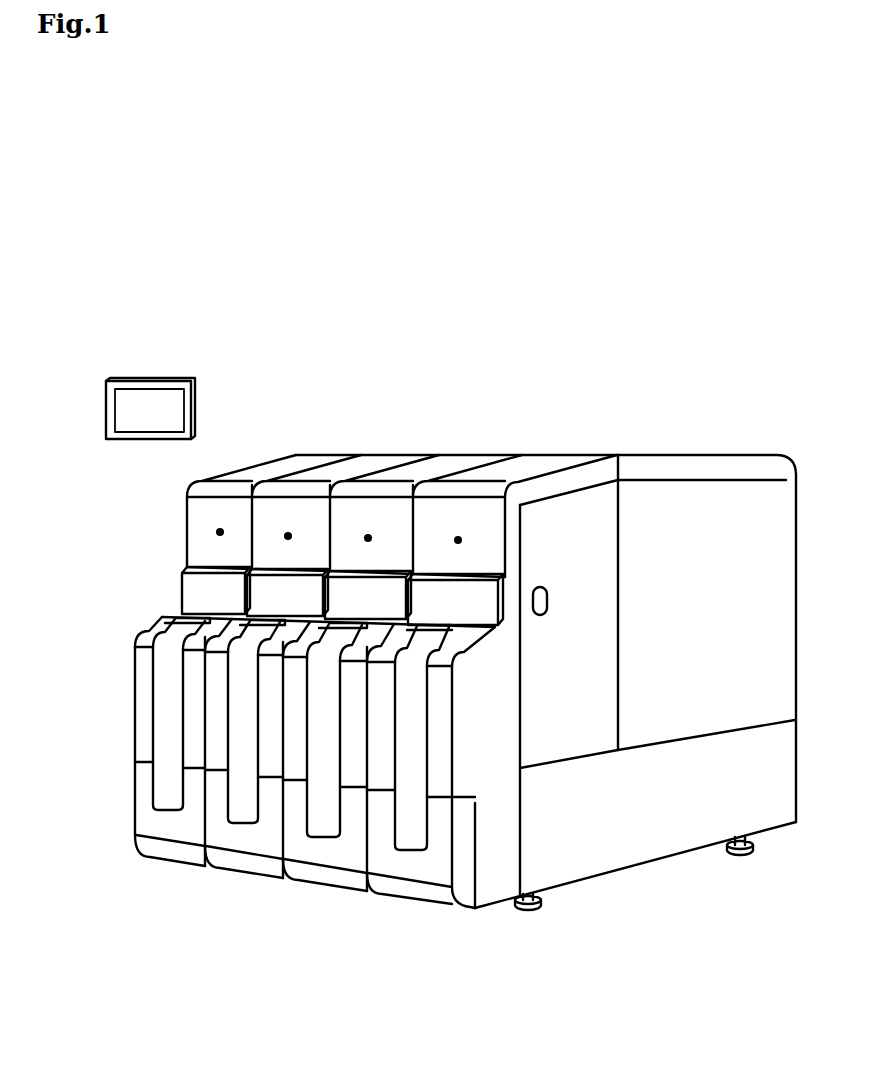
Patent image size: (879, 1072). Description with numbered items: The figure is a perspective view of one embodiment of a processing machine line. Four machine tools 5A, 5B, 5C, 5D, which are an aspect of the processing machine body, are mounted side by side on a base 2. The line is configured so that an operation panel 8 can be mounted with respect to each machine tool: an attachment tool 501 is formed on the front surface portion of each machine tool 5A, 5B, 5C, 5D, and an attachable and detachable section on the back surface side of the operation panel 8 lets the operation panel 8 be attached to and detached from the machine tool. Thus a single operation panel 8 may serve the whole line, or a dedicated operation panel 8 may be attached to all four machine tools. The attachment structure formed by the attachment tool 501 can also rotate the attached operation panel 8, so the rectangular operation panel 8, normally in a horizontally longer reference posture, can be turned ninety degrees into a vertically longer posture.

The base 2 is at (668, 832).
The machine tool 5A is at (290, 463).
The machine tool 5B is at (383, 460).
The machine tool 5C is at (468, 460).
The machine tool 5D is at (565, 460).
The attachment tool 501 is at (217, 530).
The operation panel 8 is at (137, 397).